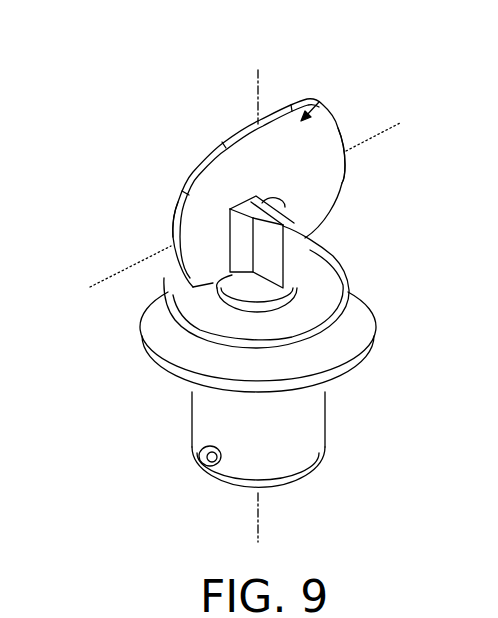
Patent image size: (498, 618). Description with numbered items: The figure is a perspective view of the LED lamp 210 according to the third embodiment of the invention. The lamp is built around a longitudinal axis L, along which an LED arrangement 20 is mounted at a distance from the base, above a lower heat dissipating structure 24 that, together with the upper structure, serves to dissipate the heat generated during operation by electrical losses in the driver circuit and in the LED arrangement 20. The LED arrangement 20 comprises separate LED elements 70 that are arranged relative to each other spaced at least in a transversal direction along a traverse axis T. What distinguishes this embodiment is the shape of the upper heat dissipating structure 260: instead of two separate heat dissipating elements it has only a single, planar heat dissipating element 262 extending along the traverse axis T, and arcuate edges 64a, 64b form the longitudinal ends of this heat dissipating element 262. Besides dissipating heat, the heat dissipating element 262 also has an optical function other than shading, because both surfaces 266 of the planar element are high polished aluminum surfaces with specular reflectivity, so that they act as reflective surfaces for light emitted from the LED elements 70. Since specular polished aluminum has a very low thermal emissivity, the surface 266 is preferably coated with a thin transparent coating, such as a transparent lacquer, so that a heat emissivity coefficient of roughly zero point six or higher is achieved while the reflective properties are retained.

The LED arrangement 20 is at (383, 205).
The lower heat dissipating structure 24 is at (382, 252).
The arcuate edge 64a is at (340, 186).
The arcuate edge 64b is at (173, 228).
The LED element 70 is at (288, 203).
The LED lamp 210 is at (367, 93).
The upper heat dissipating structure 260 is at (168, 153).
The planar heat dissipating element 262 is at (237, 138).
The surface 266 is at (320, 100).
The traverse axis T is at (400, 123).
The longitudinal axis L is at (258, 540).